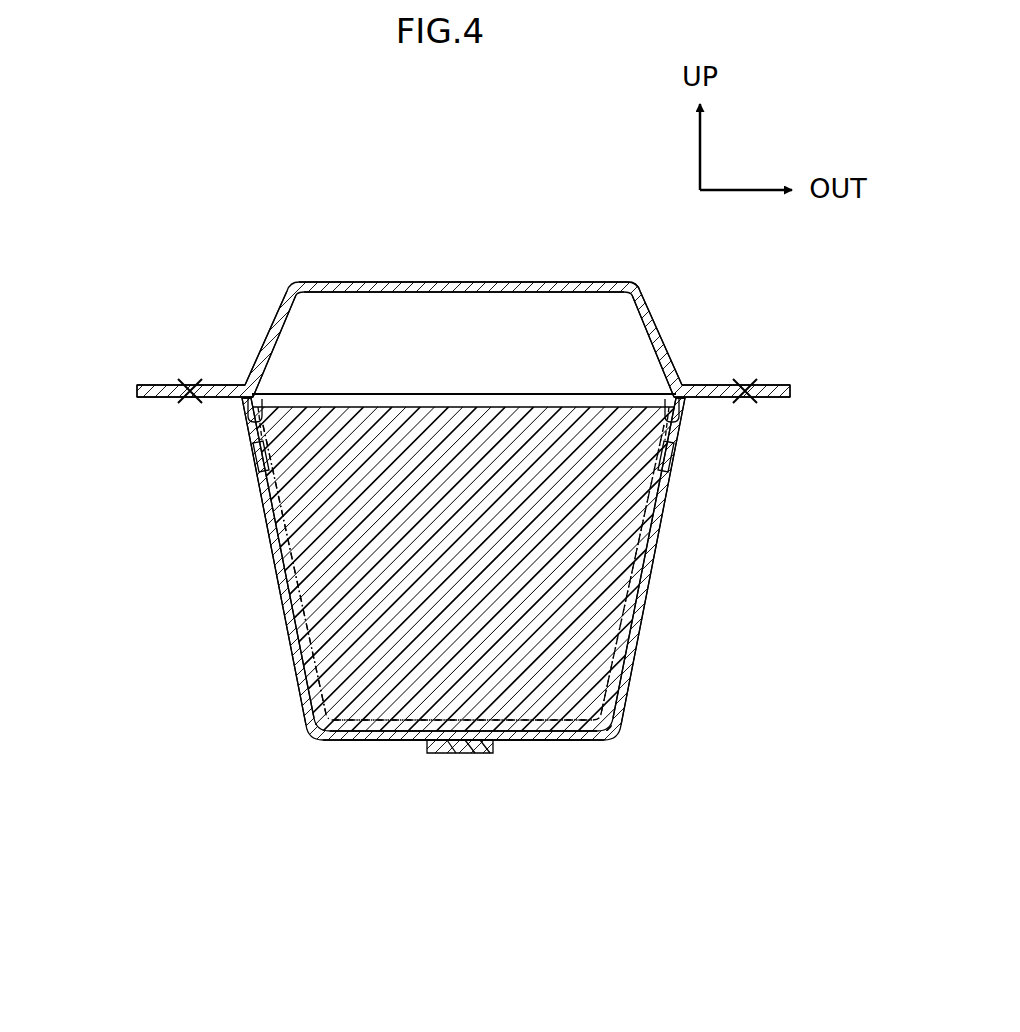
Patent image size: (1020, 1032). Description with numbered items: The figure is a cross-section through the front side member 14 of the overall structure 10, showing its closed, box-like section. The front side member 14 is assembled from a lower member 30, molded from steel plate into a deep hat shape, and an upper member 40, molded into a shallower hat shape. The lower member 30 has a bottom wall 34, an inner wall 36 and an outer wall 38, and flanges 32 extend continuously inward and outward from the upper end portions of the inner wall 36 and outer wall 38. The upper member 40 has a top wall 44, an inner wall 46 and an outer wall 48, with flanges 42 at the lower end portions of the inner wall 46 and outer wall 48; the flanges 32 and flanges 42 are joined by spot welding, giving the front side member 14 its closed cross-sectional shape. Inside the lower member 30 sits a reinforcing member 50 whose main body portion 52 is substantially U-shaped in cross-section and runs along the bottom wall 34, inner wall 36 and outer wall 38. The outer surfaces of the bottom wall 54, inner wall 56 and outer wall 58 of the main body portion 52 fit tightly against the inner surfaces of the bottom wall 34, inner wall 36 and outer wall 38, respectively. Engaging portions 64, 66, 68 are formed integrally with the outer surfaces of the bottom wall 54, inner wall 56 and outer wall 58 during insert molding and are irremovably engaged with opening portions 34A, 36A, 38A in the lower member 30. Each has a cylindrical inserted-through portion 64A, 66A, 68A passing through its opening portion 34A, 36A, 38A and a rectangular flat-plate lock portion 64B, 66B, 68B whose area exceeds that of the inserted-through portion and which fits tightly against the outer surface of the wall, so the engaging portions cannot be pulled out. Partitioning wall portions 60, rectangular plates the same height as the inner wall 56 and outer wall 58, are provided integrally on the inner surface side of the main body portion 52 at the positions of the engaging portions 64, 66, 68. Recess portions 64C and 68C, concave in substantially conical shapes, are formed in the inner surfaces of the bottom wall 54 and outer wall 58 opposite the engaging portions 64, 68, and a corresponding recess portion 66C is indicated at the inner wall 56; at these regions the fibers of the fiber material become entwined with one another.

The container assembly 10 is at (215, 225).
The front side member 14 is at (335, 272).
The lower member 30 is at (312, 745).
The flanges 32 is at (150, 398).
The bottom wall 34 is at (585, 742).
The opening portion 34A is at (455, 745).
The inner wall 36 is at (296, 660).
The opening portion 36A is at (250, 455).
The outer wall 38 is at (638, 640).
The opening portion 38A is at (674, 448).
The upper member 40 is at (592, 280).
The flanges 42 is at (165, 383).
The top wall 44 is at (452, 281).
The inner wall 46 is at (270, 333).
The outer wall 48 is at (660, 330).
The reinforcing member 50 is at (490, 390).
The main body portion 52 is at (464, 636).
The bottom wall 54 is at (382, 741).
The inner wall 56 is at (296, 585).
The outer wall 58 is at (648, 590).
The partitioning wall portions 60 is at (380, 440).
The engaging portion 64 is at (440, 758).
The inserted-through portion 64A is at (487, 748).
The lock portion 64B is at (492, 755).
The recess portion 64C is at (515, 742).
The engaging portion 66 is at (250, 472).
The inserted-through portion 66A is at (258, 455).
The lock portion 66B is at (252, 418).
The left engaging inner line 66C is at (278, 440).
The engaging portion 68 is at (674, 476).
The inserted-through portion 68A is at (669, 462).
The lock portion 68B is at (675, 418).
The recess portion 68C is at (640, 440).